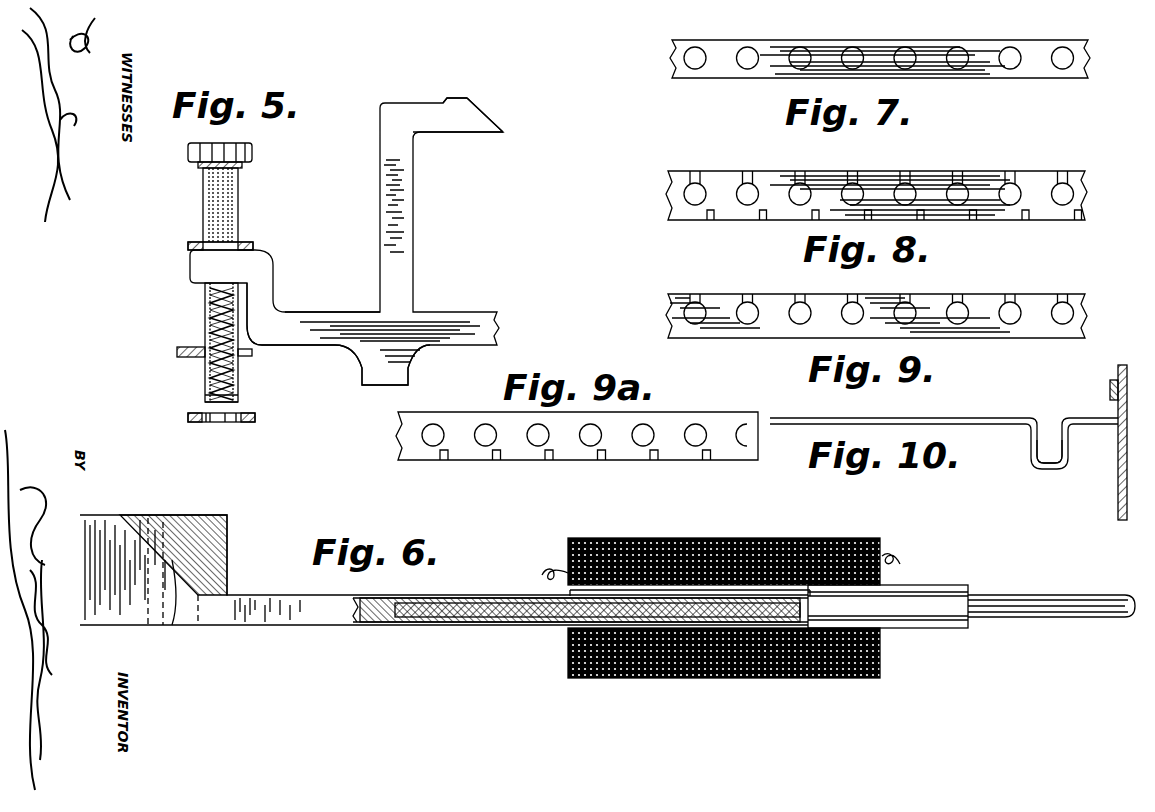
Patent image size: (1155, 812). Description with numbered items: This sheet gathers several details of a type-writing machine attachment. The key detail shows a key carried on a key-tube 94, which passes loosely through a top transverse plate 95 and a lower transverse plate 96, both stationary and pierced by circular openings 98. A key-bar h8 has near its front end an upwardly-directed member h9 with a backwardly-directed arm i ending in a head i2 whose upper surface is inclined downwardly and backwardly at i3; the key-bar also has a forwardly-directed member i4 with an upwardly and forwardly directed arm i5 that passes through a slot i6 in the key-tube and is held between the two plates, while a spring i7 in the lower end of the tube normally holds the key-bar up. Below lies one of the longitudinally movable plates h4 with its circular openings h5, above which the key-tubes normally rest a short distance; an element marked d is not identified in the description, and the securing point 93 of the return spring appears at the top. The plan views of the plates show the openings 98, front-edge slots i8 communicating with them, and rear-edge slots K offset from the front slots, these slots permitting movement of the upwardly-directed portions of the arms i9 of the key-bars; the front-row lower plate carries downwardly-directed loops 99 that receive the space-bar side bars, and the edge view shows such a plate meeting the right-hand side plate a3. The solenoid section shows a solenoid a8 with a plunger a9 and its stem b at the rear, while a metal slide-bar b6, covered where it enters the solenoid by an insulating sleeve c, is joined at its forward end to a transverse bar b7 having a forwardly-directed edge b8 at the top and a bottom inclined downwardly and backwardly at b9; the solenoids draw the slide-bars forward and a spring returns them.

In FIG. 5, the spring securing point 93 is at (252, 151).
In FIG. 5, the key-tube 94 is at (238, 205).
In FIG. 5, the top transverse plate 95 is at (253, 246).
In FIG. 7, the top transverse plate 95 is at (719, 72).
In FIG. 5, the lower transverse plate 96 is at (178, 356).
In FIG. 8, the lower transverse plate 96 is at (682, 212).
In FIG. 9, the lower transverse plate 96 is at (722, 331).
In FIG. 9A, the lower transverse plate 96 is at (735, 461).
In FIG. 10, the lower transverse plate 96 is at (1012, 426).
In FIG. 7, the circular openings 98 is at (752, 55).
In FIG. 8, the circular openings 98 is at (852, 190).
In FIG. 9, the circular openings 98 is at (800, 320).
In FIG. 9A, the circular openings 98 is at (695, 440).
In FIG. 10, the downwardly-directed loops 99 is at (1049, 470).
In FIG. 5, the backwardly-directed arm i is at (457, 122).
In FIG. 9, the backwardly-directed arm i is at (1008, 298).
In FIG. 5, the head i2 is at (460, 103).
In FIG. 5, the inclined upper surface i3 is at (484, 116).
In FIG. 5, the forwardly-directed member i4 is at (313, 326).
In FIG. 5, the upwardly and forwardly directed arm i5 is at (205, 266).
In FIG. 5, the slots in key-tubes i6 is at (207, 301).
In FIG. 5, the spring i7 is at (238, 386).
In FIG. 5, the front-edge slots i8 is at (252, 353).
In FIG. 8, the front-edge slots i8 is at (695, 180).
In FIG. 5, the key-bar arms i9 is at (250, 312).
In FIG. 5, the movable plates h4 is at (196, 422).
In FIG. 5, the circular openings h5 is at (230, 420).
In FIG. 5, the key-bar h8 is at (482, 313).
In FIG. 5, the upwardly-directed member h9 is at (398, 244).
In FIG. 5, the lug d is at (380, 378).
In FIG. 8, the rear-edge slots K is at (762, 222).
In FIG. 9A, the rear-edge slots K is at (550, 462).
In FIG. 10, the right-hand side plate a3 is at (1118, 457).
In FIG. 6, the solenoid a8 is at (833, 679).
In FIG. 6, the plunger a9 is at (915, 600).
In FIG. 6, the stem b is at (1010, 603).
In FIG. 6, the slide-bar b6 is at (342, 626).
In FIG. 6, the transverse bar b7 is at (185, 525).
In FIG. 6, the forwardly-directed edge b8 is at (125, 522).
In FIG. 6, the inclined bottom b9 is at (172, 610).
In FIG. 6, the insulating sleeve c is at (507, 626).